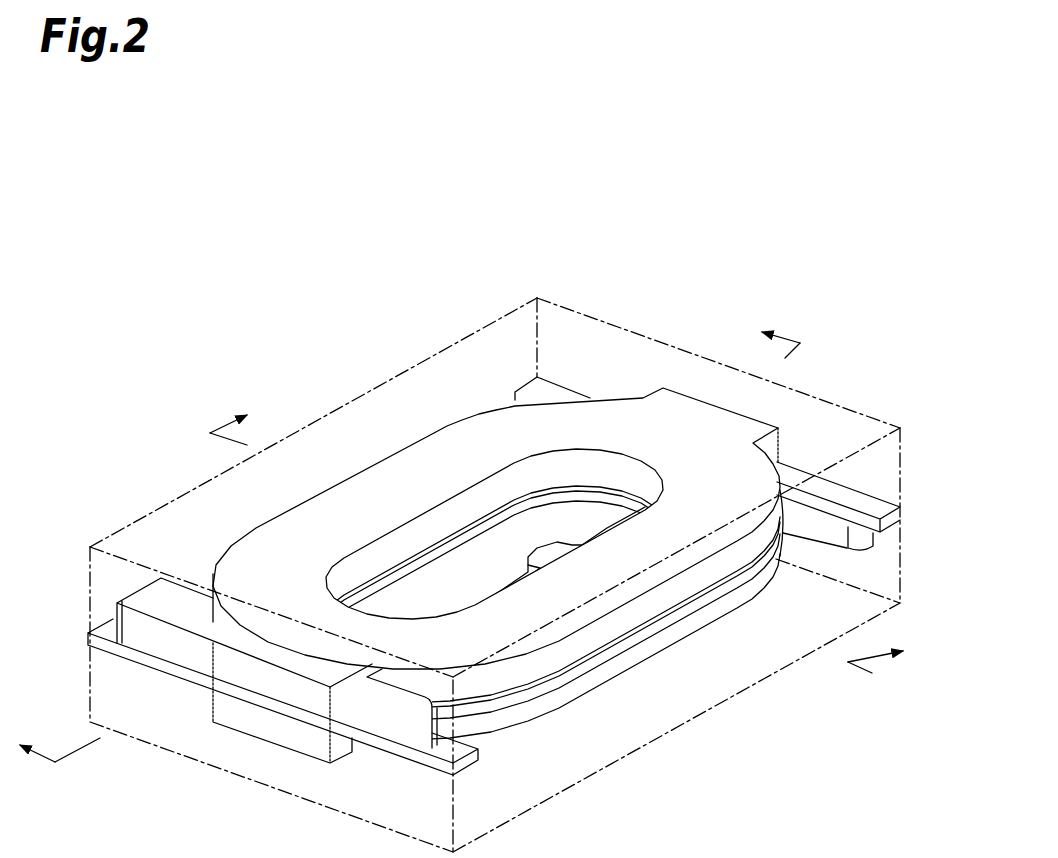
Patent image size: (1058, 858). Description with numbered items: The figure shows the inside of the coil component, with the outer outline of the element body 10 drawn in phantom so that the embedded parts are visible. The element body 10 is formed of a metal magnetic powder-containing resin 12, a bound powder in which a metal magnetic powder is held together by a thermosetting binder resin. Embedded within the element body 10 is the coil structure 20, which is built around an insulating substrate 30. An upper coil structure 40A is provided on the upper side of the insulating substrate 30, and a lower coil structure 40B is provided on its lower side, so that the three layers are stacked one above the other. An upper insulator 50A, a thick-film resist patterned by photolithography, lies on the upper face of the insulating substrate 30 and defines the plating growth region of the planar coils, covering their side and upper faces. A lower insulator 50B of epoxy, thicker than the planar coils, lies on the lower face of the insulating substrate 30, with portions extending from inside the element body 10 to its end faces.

The element body 10 is at (237, 231).
The metal magnetic powder-containing resin 12 is at (487, 323).
The coil structure 20 is at (513, 600).
The insulating substrate 30 is at (577, 679).
The upper coil structure 40A is at (577, 647).
The lower coil structure 40B is at (577, 704).
The upper insulator 50A is at (262, 557).
The lower insulator 50B is at (297, 740).